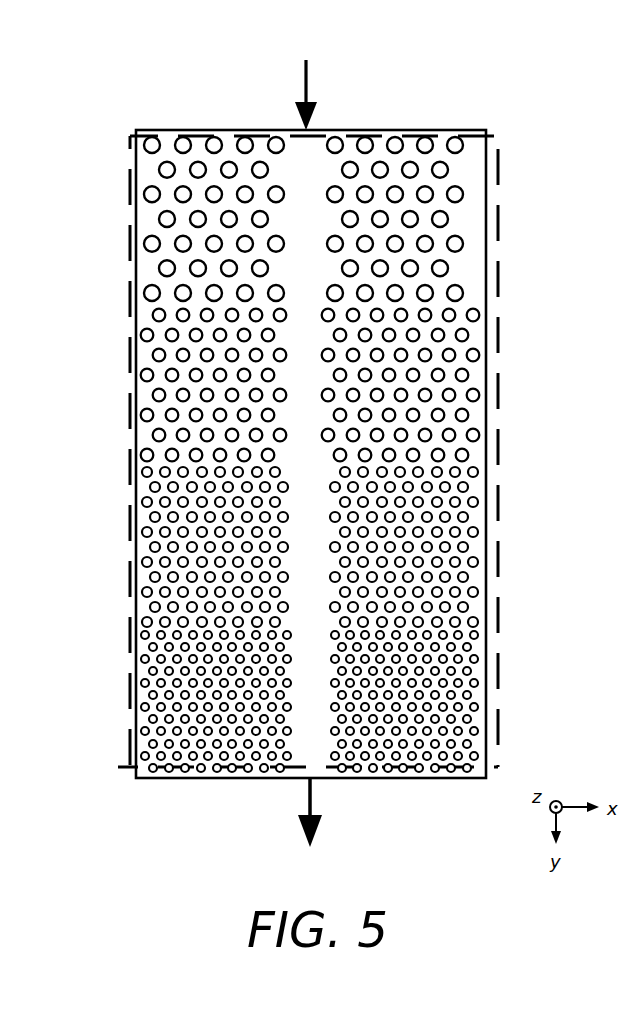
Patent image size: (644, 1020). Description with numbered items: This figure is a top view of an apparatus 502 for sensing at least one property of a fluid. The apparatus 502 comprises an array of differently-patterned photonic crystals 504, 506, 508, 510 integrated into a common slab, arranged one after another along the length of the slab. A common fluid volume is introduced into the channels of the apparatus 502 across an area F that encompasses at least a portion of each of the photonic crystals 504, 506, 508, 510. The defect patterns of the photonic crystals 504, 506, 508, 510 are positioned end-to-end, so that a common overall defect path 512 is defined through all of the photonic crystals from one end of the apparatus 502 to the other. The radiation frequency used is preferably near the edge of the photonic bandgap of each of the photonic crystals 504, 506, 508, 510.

The apparatus 502 is at (295, 446).
The photonic crystal 504 is at (122, 135).
The photonic crystal 506 is at (122, 308).
The photonic crystal 508 is at (122, 468).
The photonic crystal 510 is at (122, 620).
The common overall defect path 512 is at (308, 216).
The area F is at (498, 328).